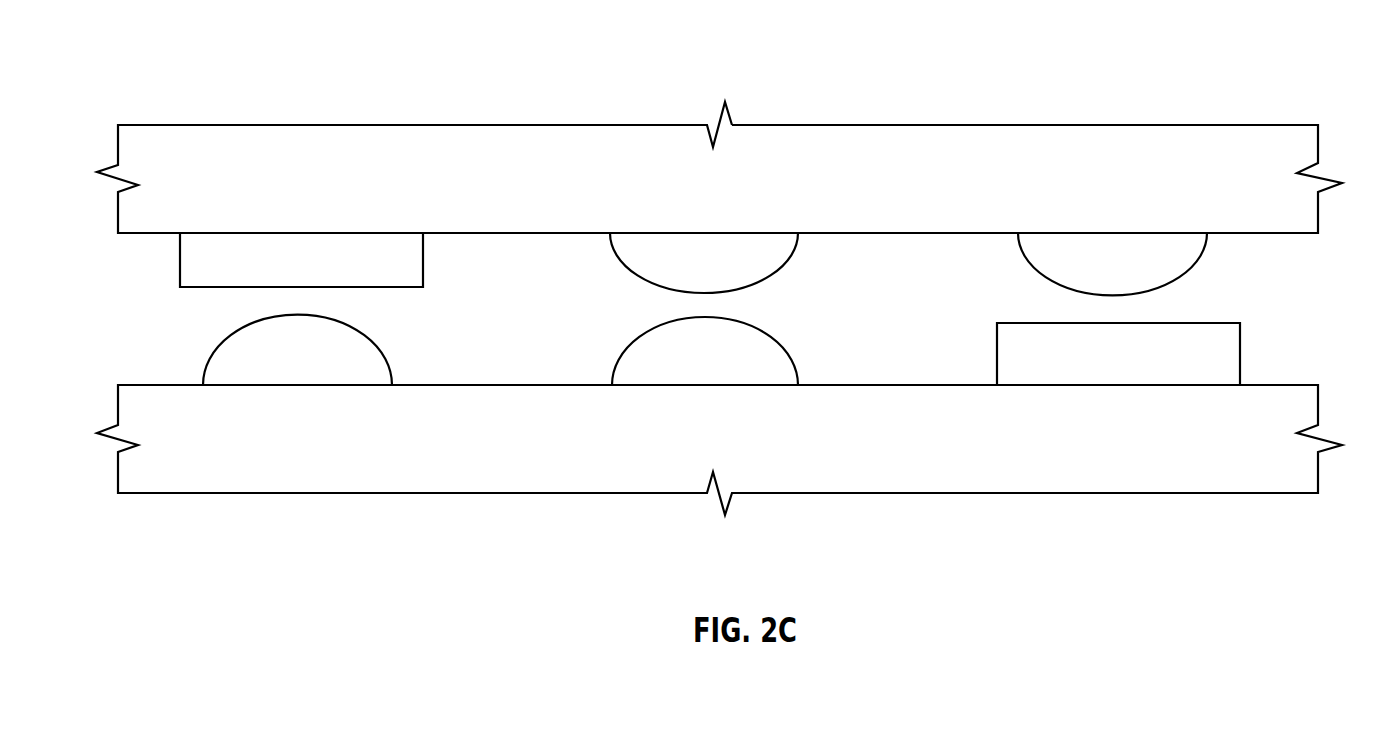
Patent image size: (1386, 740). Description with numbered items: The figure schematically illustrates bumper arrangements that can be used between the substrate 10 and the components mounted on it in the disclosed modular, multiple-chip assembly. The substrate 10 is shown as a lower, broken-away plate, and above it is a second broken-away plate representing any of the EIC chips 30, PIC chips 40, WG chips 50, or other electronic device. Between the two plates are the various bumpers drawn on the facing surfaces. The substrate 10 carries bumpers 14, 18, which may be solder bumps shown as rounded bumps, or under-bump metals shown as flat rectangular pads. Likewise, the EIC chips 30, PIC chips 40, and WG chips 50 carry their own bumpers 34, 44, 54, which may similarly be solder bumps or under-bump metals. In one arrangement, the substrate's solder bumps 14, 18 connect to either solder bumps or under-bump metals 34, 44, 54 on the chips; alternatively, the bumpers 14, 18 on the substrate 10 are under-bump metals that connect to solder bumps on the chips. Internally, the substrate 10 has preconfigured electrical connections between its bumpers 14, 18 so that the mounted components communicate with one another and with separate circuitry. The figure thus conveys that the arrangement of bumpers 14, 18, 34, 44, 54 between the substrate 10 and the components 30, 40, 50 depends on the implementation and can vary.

The substrate 10 is at (958, 475).
The first set of bumpers 14 is at (721, 350).
The second set of bumpers 18 is at (612, 363).
The EIC chips 30 is at (719, 140).
The PIC chips 40 is at (719, 140).
The WG chips 50 is at (960, 145).
The under-bump metals 34 is at (693, 271).
The under-bump metals 44 is at (693, 271).
The under-bump metals 54 is at (640, 280).